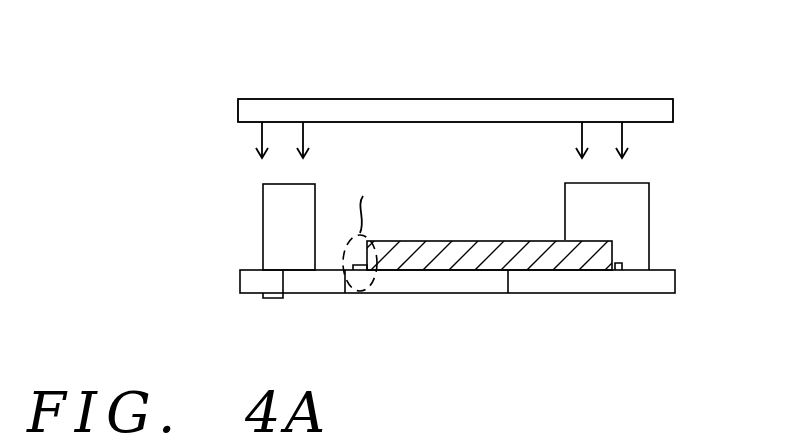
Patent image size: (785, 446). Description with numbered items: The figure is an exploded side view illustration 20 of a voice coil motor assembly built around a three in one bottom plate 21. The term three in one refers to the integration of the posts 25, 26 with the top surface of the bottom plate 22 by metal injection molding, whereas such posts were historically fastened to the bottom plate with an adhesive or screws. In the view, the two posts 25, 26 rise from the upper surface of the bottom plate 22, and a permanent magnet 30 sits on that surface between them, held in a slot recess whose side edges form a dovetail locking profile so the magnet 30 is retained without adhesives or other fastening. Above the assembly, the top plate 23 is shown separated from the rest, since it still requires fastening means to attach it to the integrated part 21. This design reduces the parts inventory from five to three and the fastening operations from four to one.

The exploded side view illustration 20 is at (215, 73).
The three in one bottom plate 21 is at (364, 314).
The bottom plate 22 is at (637, 282).
The top plate 23 is at (474, 108).
The post 25 is at (273, 215).
The post 26 is at (638, 218).
The permanent magnet 30 is at (540, 255).